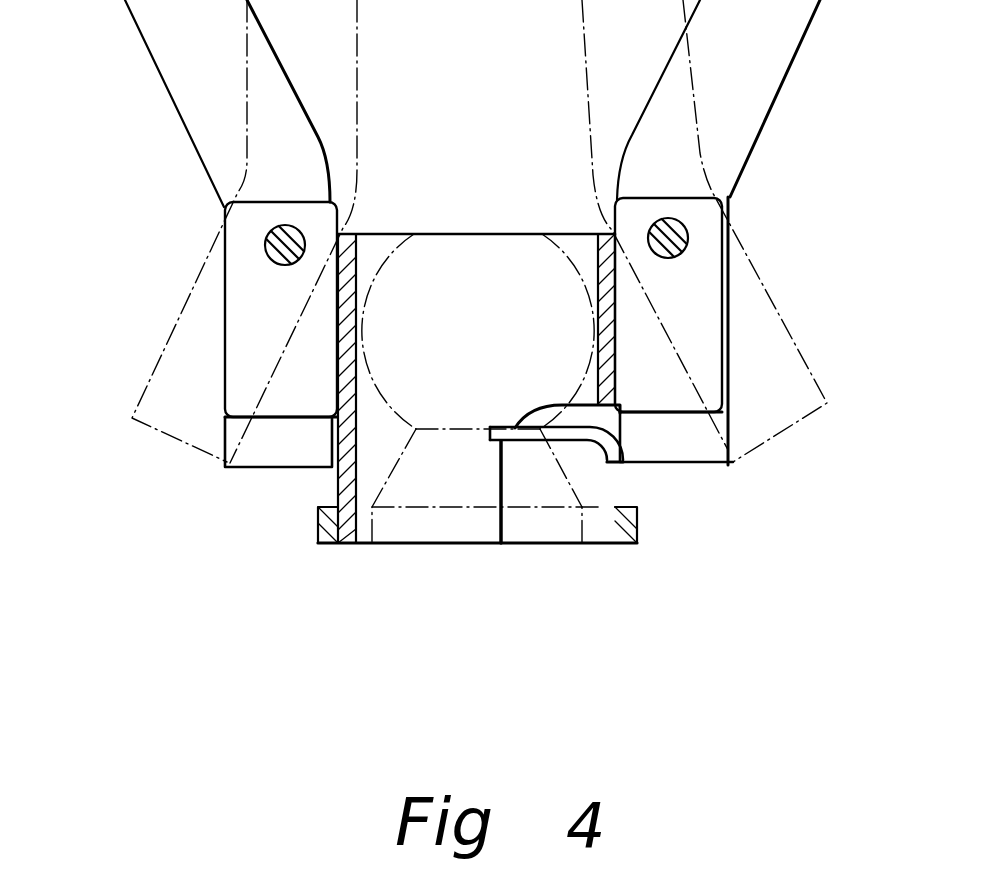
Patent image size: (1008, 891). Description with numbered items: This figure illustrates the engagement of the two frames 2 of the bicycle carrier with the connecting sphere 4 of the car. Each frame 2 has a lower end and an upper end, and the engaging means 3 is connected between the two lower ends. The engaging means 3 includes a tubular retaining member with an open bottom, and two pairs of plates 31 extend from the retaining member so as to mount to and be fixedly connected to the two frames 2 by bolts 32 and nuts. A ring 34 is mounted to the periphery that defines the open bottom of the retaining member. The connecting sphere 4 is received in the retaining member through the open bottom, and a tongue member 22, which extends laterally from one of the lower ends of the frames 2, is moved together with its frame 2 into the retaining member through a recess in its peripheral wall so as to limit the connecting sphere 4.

The frame 2 is at (152, 57).
The engaging means 3 is at (655, 555).
The connecting sphere 4 is at (475, 286).
The tongue member 22 is at (578, 430).
The plates 31 is at (243, 340).
The bolt 32 is at (267, 243).
The ring 34 is at (322, 545).